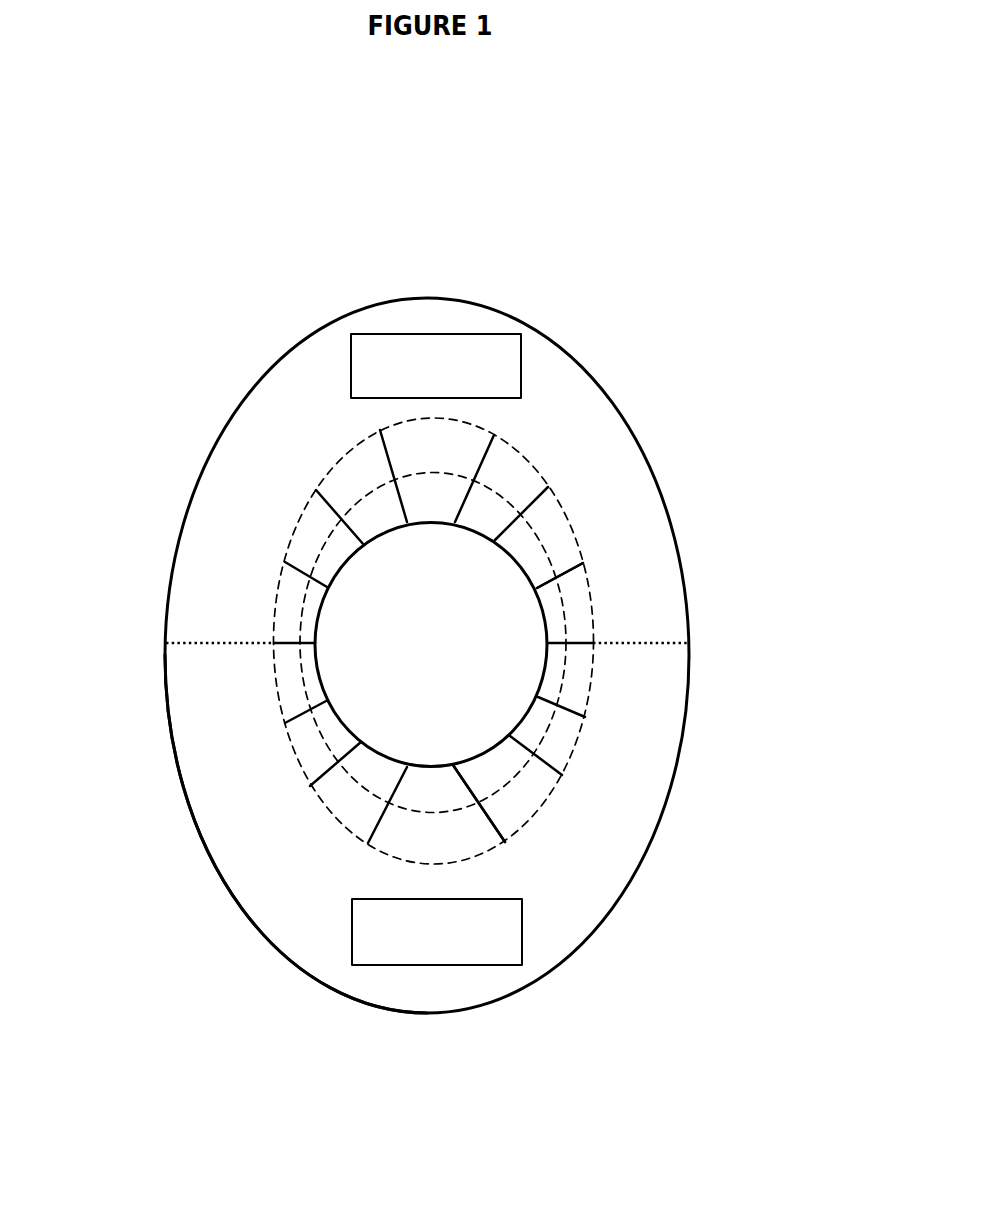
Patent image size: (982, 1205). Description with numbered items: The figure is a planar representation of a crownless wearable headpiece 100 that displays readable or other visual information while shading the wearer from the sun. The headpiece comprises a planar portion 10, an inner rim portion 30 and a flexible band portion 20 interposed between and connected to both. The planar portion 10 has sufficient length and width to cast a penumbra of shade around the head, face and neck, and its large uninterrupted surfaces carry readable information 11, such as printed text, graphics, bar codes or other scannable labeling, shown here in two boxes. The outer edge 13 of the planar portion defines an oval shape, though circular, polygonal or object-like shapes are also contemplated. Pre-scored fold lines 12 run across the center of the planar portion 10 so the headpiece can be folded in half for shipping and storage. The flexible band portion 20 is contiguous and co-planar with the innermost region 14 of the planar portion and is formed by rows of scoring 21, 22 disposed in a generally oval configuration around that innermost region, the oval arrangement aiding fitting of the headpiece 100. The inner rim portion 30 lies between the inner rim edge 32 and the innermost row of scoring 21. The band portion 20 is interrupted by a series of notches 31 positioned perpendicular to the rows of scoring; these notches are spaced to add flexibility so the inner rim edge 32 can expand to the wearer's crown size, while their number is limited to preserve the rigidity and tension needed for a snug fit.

The crownless wearable headpiece 100 is at (266, 302).
The planar portion 10 is at (567, 400).
The readable information 11 is at (522, 938).
The pre-scored fold lines 12 is at (240, 641).
The outer edge of the planar portion 13 is at (230, 890).
The innermost region of the planar portion 14 is at (285, 747).
The flexible band portion 20 is at (577, 615).
The innermost row of scoring 21 is at (562, 692).
The row of scoring 22 is at (578, 735).
The inner rim portion 30 is at (538, 562).
The notches 31 is at (553, 760).
The inner rim edge 32 is at (485, 755).